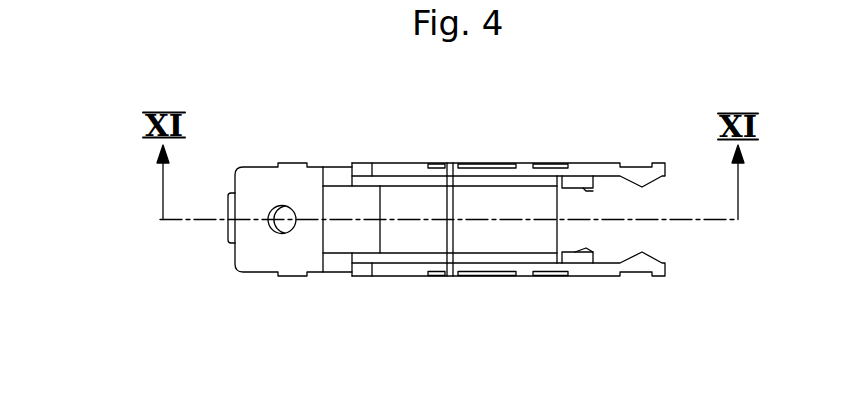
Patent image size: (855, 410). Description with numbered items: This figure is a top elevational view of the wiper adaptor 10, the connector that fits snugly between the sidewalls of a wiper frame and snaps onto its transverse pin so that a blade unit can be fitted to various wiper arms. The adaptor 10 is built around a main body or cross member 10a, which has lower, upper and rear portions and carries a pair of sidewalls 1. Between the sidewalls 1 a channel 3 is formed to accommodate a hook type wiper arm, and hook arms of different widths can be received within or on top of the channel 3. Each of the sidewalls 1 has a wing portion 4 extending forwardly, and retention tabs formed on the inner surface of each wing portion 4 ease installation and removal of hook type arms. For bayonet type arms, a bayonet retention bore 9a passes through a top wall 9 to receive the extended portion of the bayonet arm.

The adaptor 10 is at (286, 119).
The main body member 10a is at (340, 236).
The top wall 9 is at (253, 253).
The bayonet retention bore 9a is at (287, 231).
The sidewalls 1 is at (392, 162).
The channel 3 is at (503, 188).
The wing portion 4 is at (590, 162).